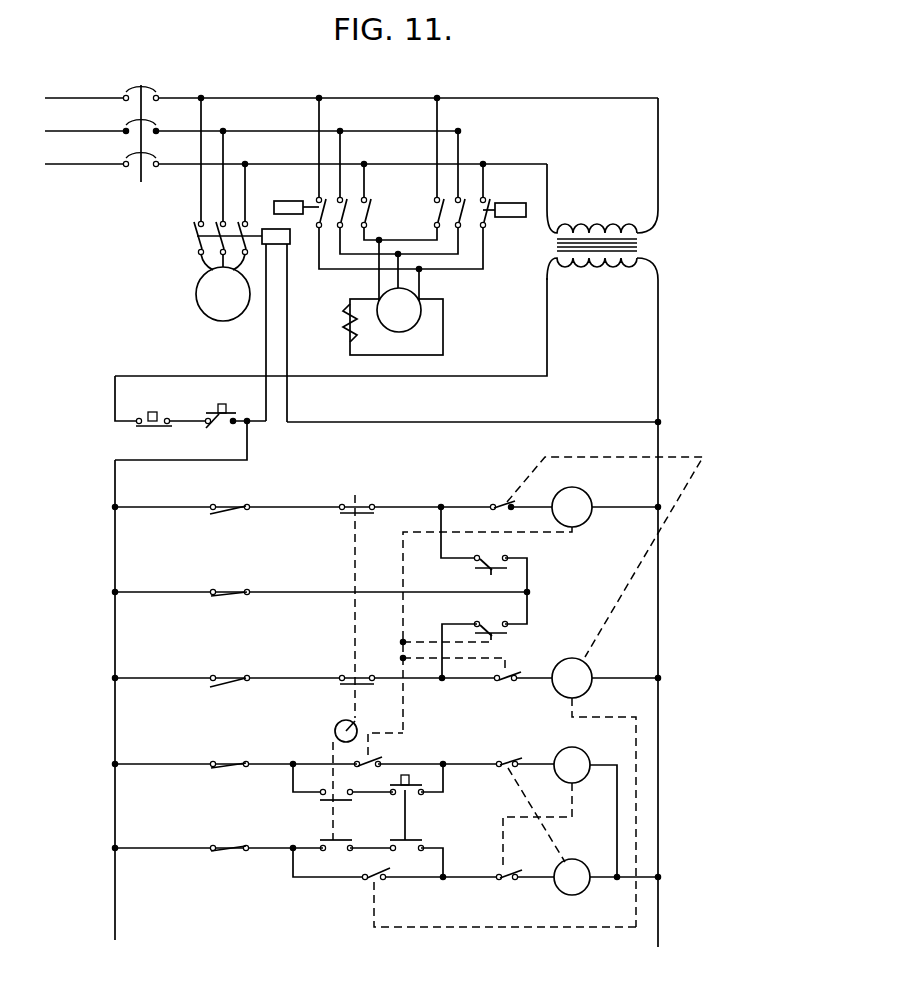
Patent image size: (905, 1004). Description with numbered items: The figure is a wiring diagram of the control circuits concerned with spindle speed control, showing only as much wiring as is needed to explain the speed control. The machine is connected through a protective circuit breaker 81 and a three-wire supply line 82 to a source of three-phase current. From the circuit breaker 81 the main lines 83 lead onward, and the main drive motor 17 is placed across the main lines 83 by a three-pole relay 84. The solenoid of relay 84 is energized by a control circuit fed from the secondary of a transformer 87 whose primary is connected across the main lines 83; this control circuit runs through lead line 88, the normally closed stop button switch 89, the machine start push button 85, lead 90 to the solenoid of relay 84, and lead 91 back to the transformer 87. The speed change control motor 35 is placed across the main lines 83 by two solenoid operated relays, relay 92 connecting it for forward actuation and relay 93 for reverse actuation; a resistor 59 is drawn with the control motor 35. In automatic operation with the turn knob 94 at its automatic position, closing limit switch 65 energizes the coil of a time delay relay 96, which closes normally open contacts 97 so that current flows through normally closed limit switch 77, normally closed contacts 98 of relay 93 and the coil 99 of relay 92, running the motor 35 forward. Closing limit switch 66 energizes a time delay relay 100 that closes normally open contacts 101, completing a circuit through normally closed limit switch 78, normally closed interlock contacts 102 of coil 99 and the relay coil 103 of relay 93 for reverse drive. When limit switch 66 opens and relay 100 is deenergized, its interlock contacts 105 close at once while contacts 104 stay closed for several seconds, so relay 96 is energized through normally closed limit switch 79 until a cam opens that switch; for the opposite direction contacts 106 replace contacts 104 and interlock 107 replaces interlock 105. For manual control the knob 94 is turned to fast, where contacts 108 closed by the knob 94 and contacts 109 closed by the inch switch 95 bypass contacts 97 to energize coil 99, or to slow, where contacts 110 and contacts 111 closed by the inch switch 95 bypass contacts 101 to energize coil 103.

The circuit breaker 81 is at (146, 84).
The three-wire supply line 82 is at (75, 131).
The main lines 83 is at (256, 163).
The three-pole relay 84 is at (189, 226).
The main drive motor 17 is at (195, 294).
The lead 90 is at (264, 338).
The forward motor control relay 92 is at (378, 183).
The reverse motor control relay 93 is at (480, 161).
The speed change control motor 35 is at (396, 297).
The resistor 59 is at (338, 327).
The transformer 87 is at (655, 247).
The lead line 88 is at (552, 329).
The stop button switch 89 is at (155, 406).
The machine start push button 85 is at (219, 428).
The lead 91 is at (491, 419).
The limit switch 66 is at (233, 505).
The limit switch 79 is at (233, 590).
The limit switch 65 is at (234, 671).
The limit switch 78 is at (231, 760).
The limit switch 77 is at (234, 838).
The turn knob 94 is at (336, 738).
The normally open contacts 101 is at (378, 760).
The inch switch 95 is at (412, 777).
The contacts 110 is at (320, 803).
The contacts 111 is at (412, 797).
The contacts 108 is at (322, 840).
The contacts 109 is at (417, 842).
The normally open contacts 97 is at (364, 886).
The normally closed contacts 98 is at (507, 884).
The relay coil 99 is at (583, 891).
The interlock contacts 102 is at (513, 759).
The relay coil 103 is at (584, 754).
The time delay relay 96 is at (588, 671).
The interlock contacts 105 is at (500, 686).
The contacts 104 is at (465, 635).
The contacts 106 is at (484, 549).
The interlock 107 is at (503, 503).
The time delay relay 100 is at (590, 491).